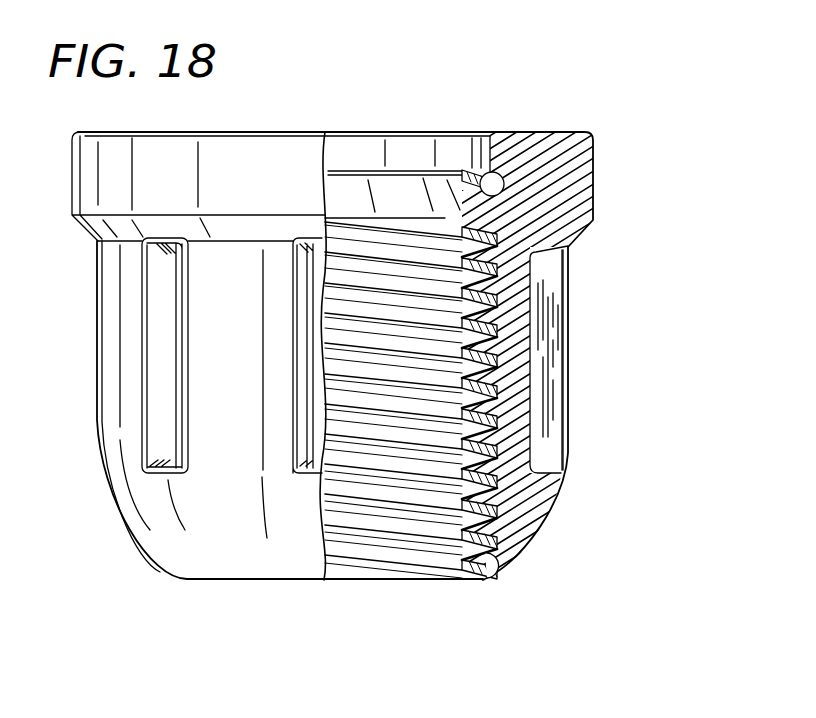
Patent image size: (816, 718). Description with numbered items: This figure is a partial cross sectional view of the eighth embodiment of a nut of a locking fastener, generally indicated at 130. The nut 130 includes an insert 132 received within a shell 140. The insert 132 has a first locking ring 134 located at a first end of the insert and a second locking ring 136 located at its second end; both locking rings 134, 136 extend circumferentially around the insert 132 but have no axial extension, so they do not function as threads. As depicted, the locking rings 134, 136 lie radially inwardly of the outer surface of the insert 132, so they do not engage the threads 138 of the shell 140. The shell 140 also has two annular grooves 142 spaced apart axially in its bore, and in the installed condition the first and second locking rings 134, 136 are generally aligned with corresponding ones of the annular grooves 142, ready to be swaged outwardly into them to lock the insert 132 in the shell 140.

The nut 130 is at (622, 91).
The insert 132 is at (467, 240).
The first locking ring 134 is at (490, 170).
The second locking ring 136 is at (476, 582).
The threads 138 is at (507, 443).
The shell 140 is at (593, 198).
The annular grooves 142 is at (507, 182).